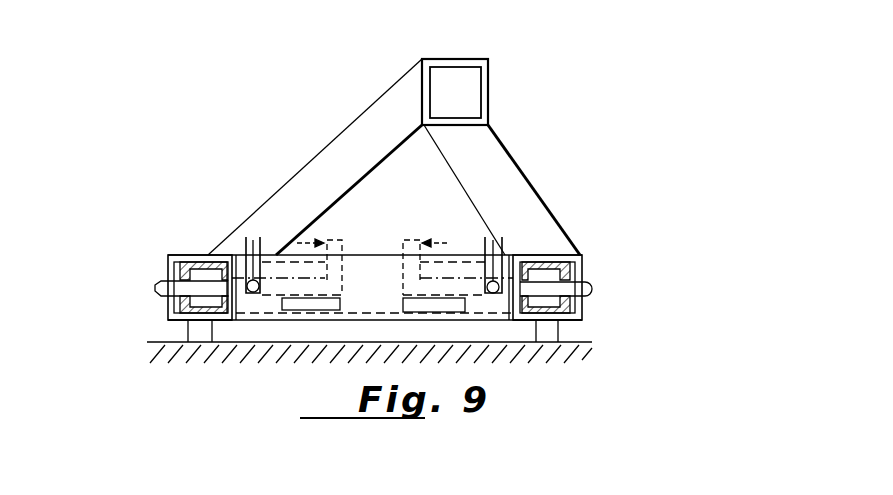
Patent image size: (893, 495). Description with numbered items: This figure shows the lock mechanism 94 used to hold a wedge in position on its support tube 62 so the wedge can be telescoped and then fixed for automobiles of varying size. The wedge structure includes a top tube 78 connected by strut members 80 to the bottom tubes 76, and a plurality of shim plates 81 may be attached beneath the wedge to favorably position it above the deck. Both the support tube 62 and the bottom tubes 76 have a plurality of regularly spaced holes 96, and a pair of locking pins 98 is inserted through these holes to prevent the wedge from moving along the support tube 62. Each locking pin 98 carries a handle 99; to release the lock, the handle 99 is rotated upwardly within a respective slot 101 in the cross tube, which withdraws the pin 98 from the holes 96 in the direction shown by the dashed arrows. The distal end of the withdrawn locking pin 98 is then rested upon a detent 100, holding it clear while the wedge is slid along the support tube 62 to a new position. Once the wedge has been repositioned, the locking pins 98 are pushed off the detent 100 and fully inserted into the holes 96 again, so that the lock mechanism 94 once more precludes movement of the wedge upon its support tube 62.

The lock mechanism 94 is at (632, 265).
The top tube 78 is at (482, 86).
The strut members 80 is at (400, 105).
The bottom tubes 76 is at (170, 254).
The holes 96 is at (182, 270).
The locking pins 98 is at (155, 286).
The support tube 62 is at (168, 320).
The shim plates 81 is at (200, 338).
The handle 99 is at (253, 238).
The slots 101 is at (259, 243).
The detent 100 is at (342, 304).